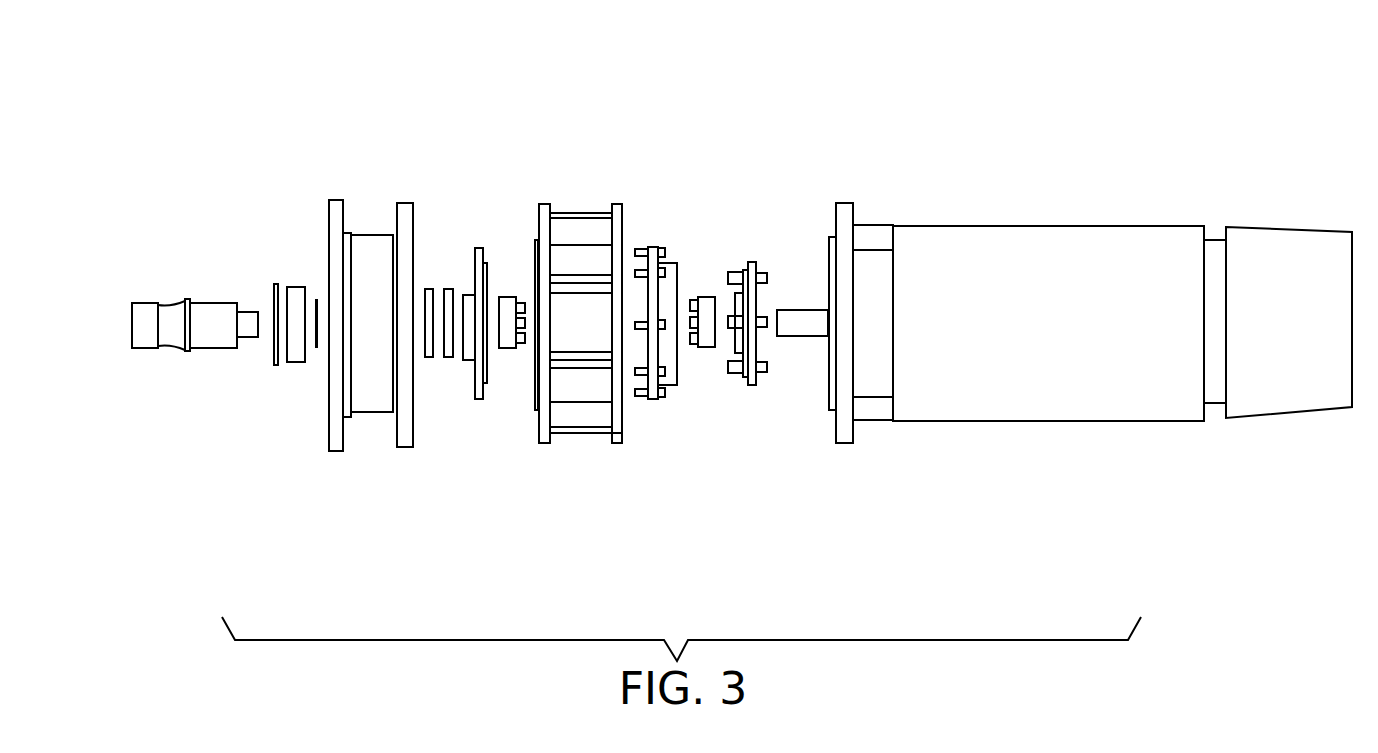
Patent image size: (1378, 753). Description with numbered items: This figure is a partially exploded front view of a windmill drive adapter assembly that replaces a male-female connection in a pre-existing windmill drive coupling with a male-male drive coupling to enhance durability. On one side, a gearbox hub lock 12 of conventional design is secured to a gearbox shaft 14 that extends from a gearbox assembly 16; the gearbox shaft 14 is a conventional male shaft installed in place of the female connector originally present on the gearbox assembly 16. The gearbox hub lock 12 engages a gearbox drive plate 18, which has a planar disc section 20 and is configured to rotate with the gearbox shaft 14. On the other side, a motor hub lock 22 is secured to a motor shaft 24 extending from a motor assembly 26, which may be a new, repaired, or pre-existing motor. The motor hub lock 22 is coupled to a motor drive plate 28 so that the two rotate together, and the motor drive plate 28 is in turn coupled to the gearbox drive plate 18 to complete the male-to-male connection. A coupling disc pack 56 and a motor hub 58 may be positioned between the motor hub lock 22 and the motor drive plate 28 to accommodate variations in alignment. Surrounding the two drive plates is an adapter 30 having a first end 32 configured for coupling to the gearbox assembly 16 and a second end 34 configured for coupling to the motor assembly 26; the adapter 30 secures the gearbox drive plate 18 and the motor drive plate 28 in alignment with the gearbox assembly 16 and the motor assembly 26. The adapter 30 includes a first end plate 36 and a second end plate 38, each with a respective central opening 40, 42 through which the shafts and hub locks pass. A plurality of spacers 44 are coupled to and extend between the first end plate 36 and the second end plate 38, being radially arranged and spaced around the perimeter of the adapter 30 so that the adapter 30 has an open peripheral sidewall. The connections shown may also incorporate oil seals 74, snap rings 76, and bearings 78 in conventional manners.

The gearbox hub lock 12 is at (512, 300).
The gearbox shaft 14 is at (212, 340).
The gearbox assembly 16 is at (370, 400).
The gearbox drive plate 18 is at (458, 419).
The planar disc section 20 is at (480, 247).
The motor hub lock 22 is at (705, 348).
The motor shaft 24 is at (802, 327).
The motor assembly 26 is at (1032, 226).
The motor drive plate 28 is at (670, 272).
The adapter 30 is at (580, 323).
The first end 32 is at (622, 208).
The second end 34 is at (540, 203).
The first end plate 36 is at (618, 432).
The second end plate 38 is at (541, 432).
The central opening 40 is at (647, 430).
The central opening 42 is at (515, 418).
The spacers 44 is at (583, 430).
The coupling disc pack 56 is at (744, 272).
The motor hub 58 is at (757, 270).
The oil seals 74 is at (432, 289).
The snap rings 76 is at (275, 295).
The bearings 78 is at (291, 287).